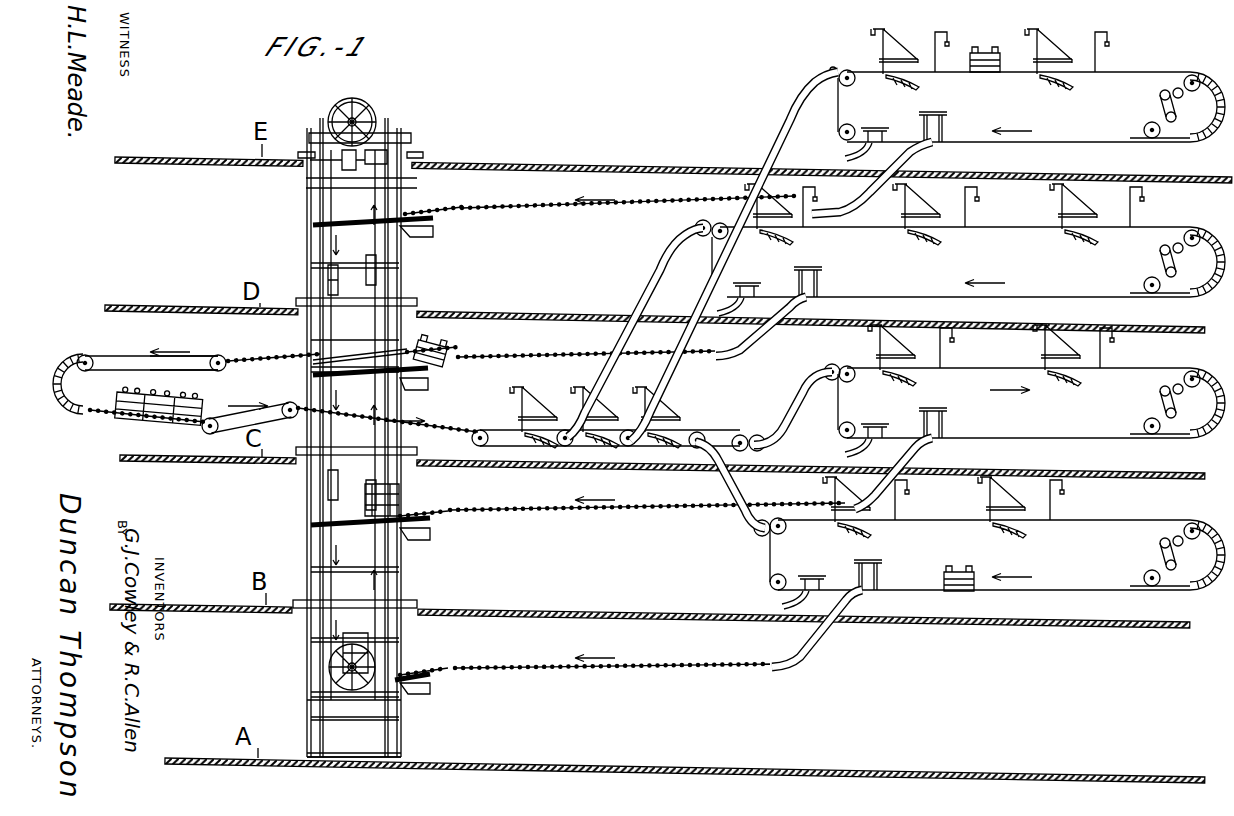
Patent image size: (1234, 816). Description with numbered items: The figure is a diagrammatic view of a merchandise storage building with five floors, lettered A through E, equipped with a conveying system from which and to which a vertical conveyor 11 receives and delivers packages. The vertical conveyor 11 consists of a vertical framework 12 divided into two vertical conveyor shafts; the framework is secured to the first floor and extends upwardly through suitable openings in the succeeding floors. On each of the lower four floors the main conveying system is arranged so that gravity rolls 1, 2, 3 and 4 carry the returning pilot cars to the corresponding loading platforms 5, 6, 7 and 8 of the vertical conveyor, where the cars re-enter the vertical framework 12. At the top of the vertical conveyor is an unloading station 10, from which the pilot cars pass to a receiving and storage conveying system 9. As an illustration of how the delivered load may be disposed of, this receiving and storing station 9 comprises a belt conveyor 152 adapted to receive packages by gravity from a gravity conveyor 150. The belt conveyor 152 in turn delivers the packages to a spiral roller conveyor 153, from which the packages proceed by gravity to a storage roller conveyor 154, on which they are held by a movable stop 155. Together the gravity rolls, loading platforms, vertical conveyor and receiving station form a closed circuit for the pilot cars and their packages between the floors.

The gravity rolls 1 is at (540, 670).
The gravity rolls 2 is at (576, 507).
The gravity rolls 3 is at (568, 355).
The gravity rolls 4 is at (596, 210).
The loading platform 5 is at (444, 672).
The loading platform 6 is at (444, 516).
The loading platform 7 is at (443, 362).
The loading platform 8 is at (450, 214).
The receiving and storage conveying system 9 is at (96, 356).
The unloading station 10 is at (308, 369).
The vertical conveyor 11 is at (395, 150).
The vertical framework 12 is at (382, 743).
The gravity conveyor 150 is at (262, 358).
The belt conveyor 152 is at (190, 358).
The spiral roller conveyor 153 is at (62, 398).
The storage roller conveyor 154 is at (147, 416).
The movable stop 155 is at (209, 418).